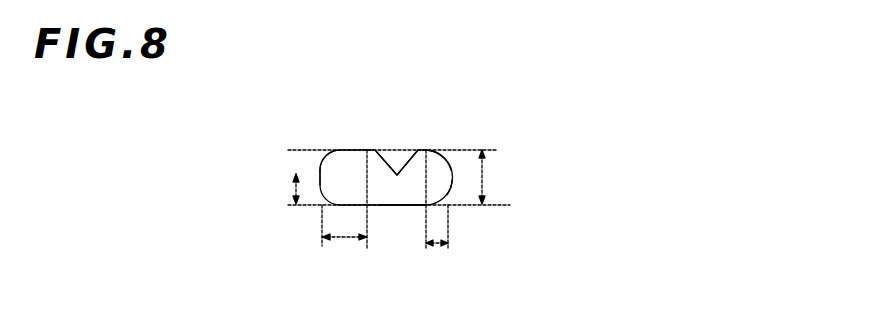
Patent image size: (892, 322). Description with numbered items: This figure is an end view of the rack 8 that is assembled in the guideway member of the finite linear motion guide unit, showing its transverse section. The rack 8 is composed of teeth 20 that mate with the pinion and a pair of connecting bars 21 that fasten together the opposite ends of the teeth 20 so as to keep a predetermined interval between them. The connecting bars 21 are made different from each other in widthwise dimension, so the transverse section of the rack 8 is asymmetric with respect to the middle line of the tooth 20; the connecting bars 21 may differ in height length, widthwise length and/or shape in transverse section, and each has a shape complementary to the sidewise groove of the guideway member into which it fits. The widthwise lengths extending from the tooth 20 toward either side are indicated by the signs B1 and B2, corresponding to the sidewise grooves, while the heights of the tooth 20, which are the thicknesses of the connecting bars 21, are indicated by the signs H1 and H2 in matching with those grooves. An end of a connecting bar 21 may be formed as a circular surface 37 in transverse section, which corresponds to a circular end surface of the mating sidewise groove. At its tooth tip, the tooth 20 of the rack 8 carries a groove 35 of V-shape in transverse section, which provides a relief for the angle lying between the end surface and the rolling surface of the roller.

The rack 8 is at (429, 147).
The groove of V-shape 35 is at (388, 150).
The circular surface 37 is at (321, 168).
The connecting bars 21 is at (335, 185).
The teeth 20 is at (400, 205).
The height length H1 is at (296, 174).
The height length H2 is at (484, 168).
The widthwise length B1 is at (340, 239).
The widthwise length B2 is at (428, 245).